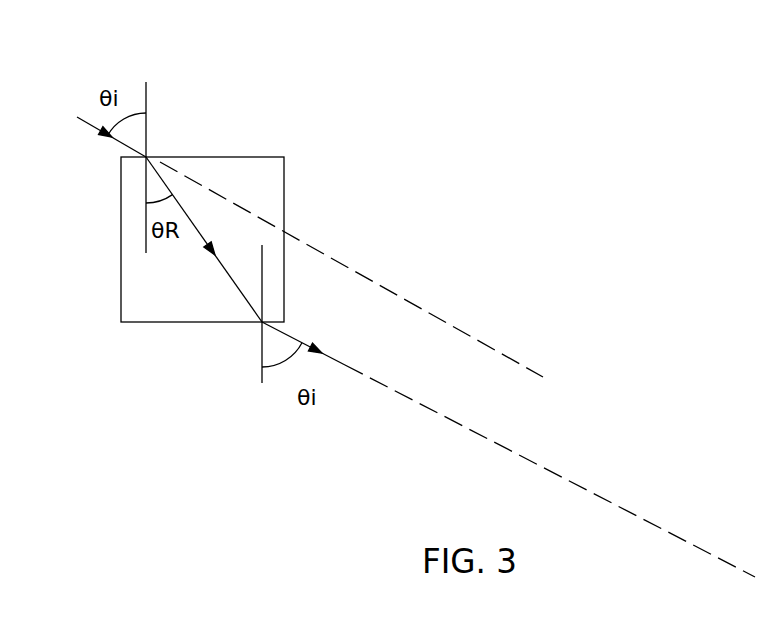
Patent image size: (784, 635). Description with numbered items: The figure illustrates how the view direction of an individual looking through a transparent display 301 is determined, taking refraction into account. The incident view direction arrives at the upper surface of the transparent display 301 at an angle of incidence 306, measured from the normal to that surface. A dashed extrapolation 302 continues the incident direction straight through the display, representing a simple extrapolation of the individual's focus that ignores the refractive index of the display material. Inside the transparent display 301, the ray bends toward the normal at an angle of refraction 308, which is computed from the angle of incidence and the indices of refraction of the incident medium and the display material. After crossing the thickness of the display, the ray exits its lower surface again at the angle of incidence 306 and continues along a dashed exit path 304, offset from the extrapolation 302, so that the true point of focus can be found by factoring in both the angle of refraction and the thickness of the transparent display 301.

The transparent display 301 is at (260, 157).
The extrapolation 302 is at (443, 318).
The exit beam path 304 is at (457, 428).
The angle of incidence 306 is at (282, 372).
The angle of refraction 308 is at (170, 252).